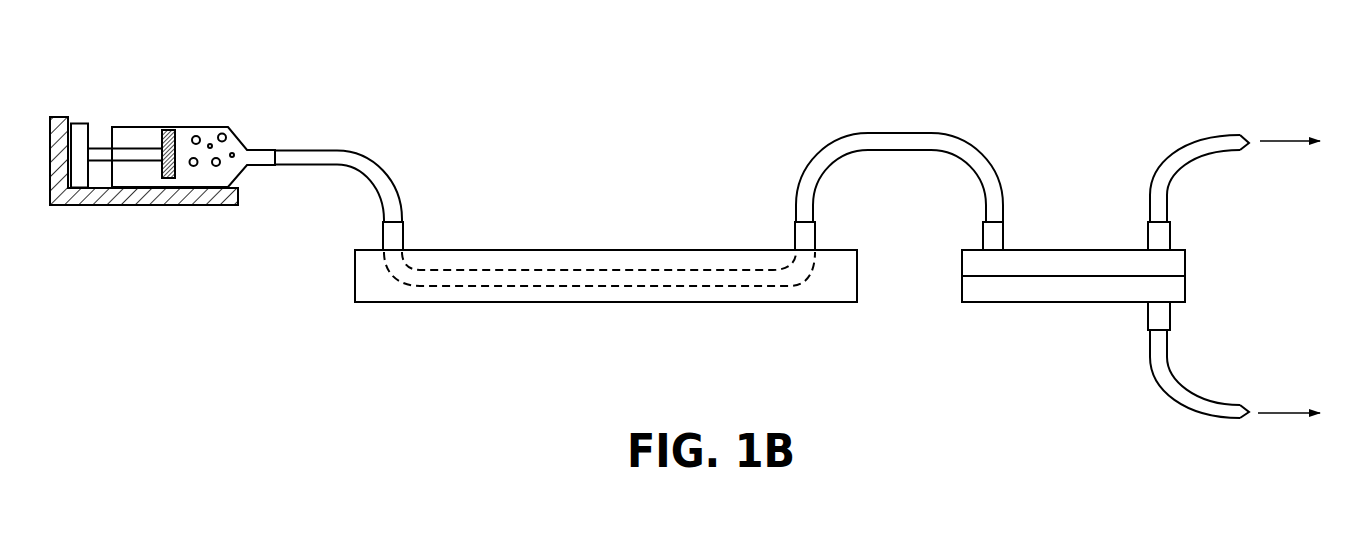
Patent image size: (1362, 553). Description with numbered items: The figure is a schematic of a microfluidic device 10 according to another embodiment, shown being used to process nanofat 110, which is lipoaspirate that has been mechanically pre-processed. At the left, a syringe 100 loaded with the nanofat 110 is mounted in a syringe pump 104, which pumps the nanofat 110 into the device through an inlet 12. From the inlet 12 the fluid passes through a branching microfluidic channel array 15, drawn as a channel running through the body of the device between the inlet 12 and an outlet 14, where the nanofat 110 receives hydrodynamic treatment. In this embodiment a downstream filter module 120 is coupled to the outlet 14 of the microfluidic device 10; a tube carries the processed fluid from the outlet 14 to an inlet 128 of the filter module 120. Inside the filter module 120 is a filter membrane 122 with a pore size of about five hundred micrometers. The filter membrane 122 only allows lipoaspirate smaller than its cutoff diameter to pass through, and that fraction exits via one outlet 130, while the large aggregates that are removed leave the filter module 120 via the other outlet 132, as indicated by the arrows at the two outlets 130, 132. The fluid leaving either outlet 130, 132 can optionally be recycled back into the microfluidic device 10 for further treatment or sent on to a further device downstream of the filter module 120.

The microfluidic device 10 is at (827, 70).
The inlet 12 is at (405, 237).
The outlet 14 is at (793, 238).
The branching microfluidic channel array 15 is at (620, 270).
The syringe 100 is at (188, 127).
The syringe pump 104 is at (130, 206).
The nanofat 110 is at (223, 131).
The filter module 120 is at (1071, 288).
The filter membrane 122 is at (1118, 264).
The inlet 128 is at (1005, 237).
The outlet 130 is at (1223, 409).
The outlet 132 is at (1223, 140).